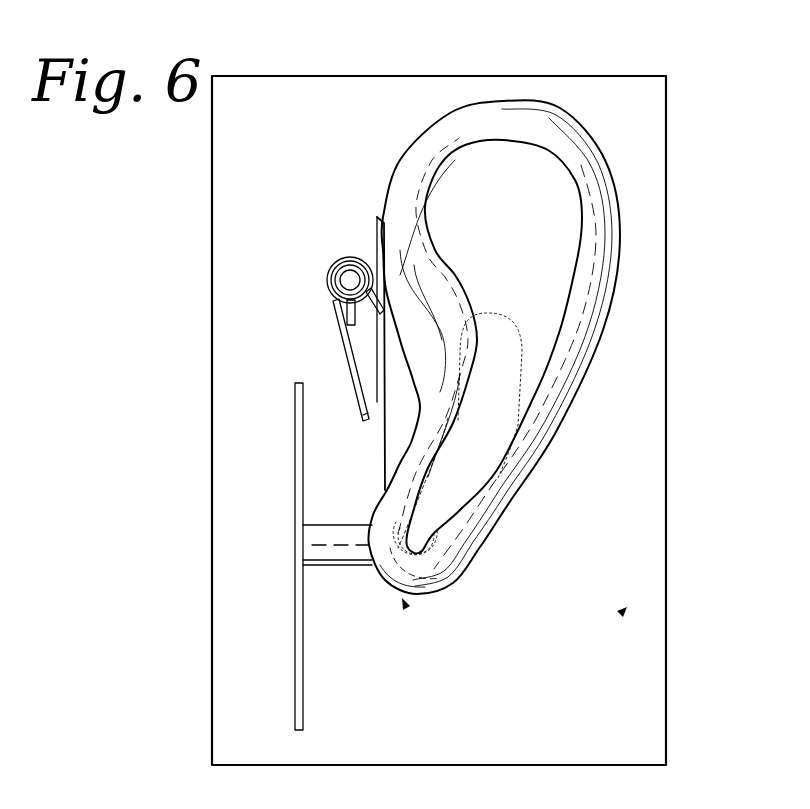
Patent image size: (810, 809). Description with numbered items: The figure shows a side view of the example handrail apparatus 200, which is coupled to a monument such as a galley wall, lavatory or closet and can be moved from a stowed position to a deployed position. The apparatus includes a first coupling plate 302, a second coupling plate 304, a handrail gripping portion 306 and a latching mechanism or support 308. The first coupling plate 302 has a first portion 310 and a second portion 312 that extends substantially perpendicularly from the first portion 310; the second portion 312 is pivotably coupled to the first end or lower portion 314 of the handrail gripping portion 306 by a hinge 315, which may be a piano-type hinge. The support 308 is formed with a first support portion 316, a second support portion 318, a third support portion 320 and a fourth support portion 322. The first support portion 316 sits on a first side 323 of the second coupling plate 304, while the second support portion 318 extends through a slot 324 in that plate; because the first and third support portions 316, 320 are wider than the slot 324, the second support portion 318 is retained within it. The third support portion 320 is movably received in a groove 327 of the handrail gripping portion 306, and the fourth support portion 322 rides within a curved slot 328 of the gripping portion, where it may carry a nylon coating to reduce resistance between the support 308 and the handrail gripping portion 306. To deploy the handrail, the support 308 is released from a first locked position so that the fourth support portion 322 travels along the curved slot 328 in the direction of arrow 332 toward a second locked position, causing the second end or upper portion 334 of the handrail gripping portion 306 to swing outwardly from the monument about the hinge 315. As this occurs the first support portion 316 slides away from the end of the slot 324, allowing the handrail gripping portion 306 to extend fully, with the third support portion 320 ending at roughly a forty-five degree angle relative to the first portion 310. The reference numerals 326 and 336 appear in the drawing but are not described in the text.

The handrail apparatus 200 is at (620, 90).
The first coupling plate 302 is at (318, 538).
The second coupling plate 304 is at (376, 231).
The handrail gripping portion 306 is at (557, 298).
The latching mechanism 308 is at (390, 398).
The first portion 310 is at (295, 505).
The second portion 312 is at (337, 553).
The first end 314 is at (428, 573).
The hinge 315 is at (405, 605).
The first support portion 316 is at (348, 281).
The second support portion 318 is at (352, 308).
The third support portion 320 is at (405, 415).
The fourth support portion 322 is at (425, 538).
The first side 323 is at (325, 146).
The slot 324 is at (350, 338).
The retaining plate 326 is at (376, 245).
The groove 327 is at (473, 392).
The curved slot 328 is at (473, 440).
The arrow 332 is at (624, 612).
The second end 334 is at (543, 197).
The neck portion 336 is at (400, 412).